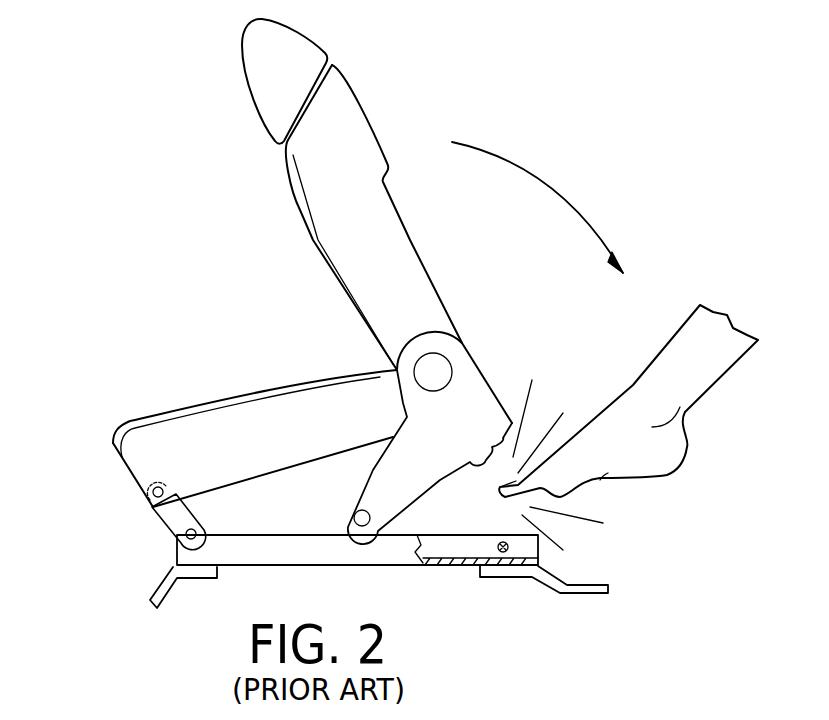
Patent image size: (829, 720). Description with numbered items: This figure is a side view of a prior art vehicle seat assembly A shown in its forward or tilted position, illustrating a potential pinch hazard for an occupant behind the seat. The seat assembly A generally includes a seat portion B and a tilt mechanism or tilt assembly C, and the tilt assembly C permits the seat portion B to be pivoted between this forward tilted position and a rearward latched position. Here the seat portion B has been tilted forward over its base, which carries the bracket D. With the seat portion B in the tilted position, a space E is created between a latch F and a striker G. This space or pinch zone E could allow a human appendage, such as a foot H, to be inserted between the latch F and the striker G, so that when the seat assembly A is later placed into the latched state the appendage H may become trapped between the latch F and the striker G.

The vehicle seat assembly A is at (113, 123).
The seat portion B is at (215, 90).
The tilt mechanism C is at (160, 527).
The base mounting bracket D is at (608, 587).
The space E is at (515, 470).
The latch F is at (478, 447).
The striker G is at (502, 552).
The foot H is at (703, 370).